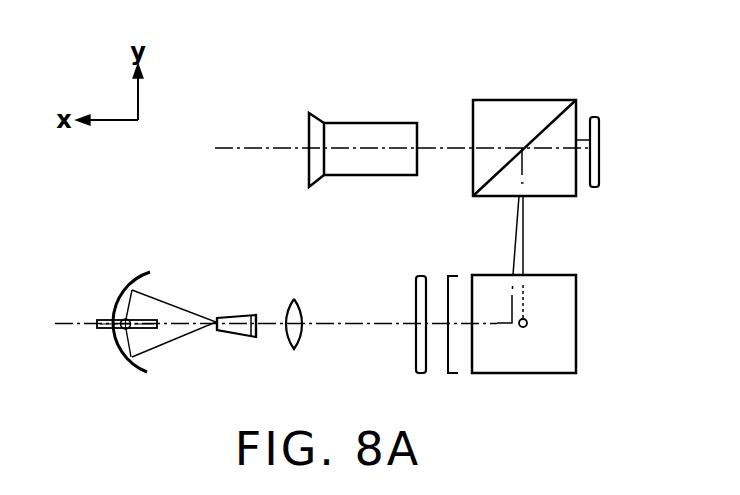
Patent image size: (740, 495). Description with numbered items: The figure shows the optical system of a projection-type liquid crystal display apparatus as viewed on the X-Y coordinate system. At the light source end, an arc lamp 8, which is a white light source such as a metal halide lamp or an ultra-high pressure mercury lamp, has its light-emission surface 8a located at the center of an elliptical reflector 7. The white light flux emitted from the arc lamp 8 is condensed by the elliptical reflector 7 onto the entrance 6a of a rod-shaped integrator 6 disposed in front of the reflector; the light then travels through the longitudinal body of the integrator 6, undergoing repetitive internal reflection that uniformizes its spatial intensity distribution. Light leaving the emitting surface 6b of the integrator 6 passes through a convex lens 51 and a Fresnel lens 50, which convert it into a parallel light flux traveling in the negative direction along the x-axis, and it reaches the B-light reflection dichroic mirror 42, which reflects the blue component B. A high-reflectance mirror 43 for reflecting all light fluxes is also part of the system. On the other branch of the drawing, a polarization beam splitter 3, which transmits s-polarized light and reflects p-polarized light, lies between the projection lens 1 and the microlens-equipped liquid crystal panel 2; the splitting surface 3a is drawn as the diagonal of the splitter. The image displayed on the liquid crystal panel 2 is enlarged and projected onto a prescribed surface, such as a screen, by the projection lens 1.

The projection lens 1 is at (371, 130).
The microlens-equipped liquid crystal panel 2 is at (597, 117).
The polarization beam splitter 3 is at (489, 112).
The beam splitting surface 3a is at (549, 118).
The rod-shaped integrator 6 is at (238, 318).
The entrance 6a is at (218, 334).
The emitting surface 6b is at (262, 330).
The elliptical reflector 7 is at (148, 272).
The arc lamp 8 is at (112, 319).
The light-emission surface 8a is at (112, 336).
The B-light reflection dichroic mirror 42 is at (456, 283).
The high-reflectance mirror 43 is at (558, 328).
The Fresnel lens 50 is at (420, 278).
The convex lens 51 is at (292, 300).
The B (blue) light B is at (516, 243).